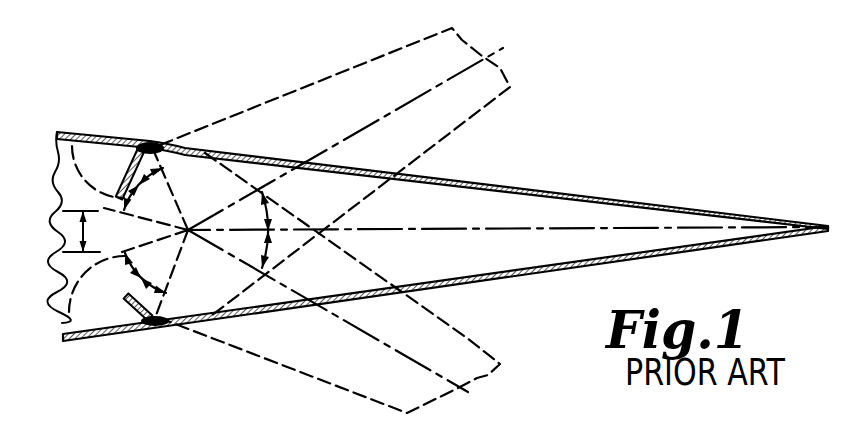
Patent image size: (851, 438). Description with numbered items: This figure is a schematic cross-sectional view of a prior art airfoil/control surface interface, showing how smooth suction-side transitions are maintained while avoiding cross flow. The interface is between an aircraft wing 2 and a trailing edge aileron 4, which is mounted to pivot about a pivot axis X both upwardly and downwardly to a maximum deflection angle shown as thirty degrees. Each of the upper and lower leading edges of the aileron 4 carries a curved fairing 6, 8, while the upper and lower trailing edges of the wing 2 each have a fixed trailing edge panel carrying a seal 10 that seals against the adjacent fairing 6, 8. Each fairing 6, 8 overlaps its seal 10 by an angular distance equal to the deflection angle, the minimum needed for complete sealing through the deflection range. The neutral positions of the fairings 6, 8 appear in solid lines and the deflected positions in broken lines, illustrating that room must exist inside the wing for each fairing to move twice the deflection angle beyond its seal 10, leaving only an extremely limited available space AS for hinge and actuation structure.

The aircraft wing 2 is at (103, 332).
The trailing edge aileron 4 is at (352, 63).
The curved fairing 6 is at (72, 146).
The curved fairing 8 is at (68, 312).
The seal 10 is at (157, 143).
The pivot axis X is at (190, 227).
The longitudinal center axis C is at (600, 228).
The available space AS is at (60, 232).